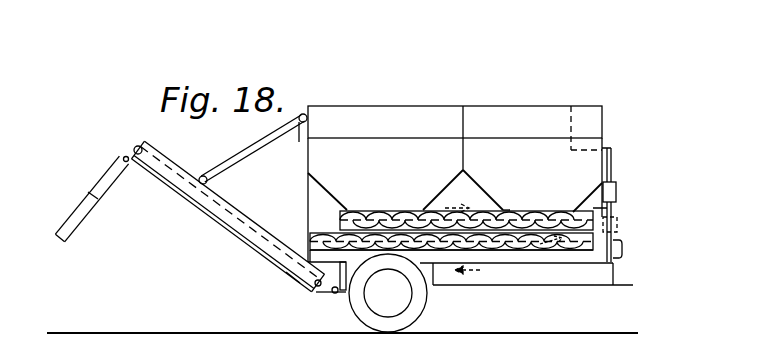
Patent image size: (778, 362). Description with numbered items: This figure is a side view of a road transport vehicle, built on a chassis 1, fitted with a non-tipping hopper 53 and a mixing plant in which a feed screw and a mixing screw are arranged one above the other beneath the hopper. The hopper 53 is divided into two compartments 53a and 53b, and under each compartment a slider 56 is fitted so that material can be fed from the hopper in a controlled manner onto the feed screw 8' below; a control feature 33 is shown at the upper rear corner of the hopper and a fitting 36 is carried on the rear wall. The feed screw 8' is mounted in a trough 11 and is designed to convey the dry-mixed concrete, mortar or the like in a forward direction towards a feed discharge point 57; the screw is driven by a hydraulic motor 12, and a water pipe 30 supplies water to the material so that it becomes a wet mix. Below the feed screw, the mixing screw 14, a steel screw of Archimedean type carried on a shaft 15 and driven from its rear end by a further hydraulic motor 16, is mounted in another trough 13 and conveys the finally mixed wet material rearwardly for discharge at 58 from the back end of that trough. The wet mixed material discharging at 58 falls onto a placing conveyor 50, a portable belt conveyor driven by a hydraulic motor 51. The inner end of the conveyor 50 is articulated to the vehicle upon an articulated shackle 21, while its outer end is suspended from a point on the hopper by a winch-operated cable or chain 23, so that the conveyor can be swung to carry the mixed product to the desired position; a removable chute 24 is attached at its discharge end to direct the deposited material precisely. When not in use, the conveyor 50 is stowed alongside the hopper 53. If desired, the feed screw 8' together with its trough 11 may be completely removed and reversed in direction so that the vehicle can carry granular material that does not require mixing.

The chassis 1 is at (556, 275).
The feed screw 8' is at (466, 195).
The trough 11 is at (505, 208).
The hydraulic motor 12 is at (618, 248).
The trough 13 is at (446, 268).
The mixing screw 14 is at (503, 266).
The shaft 15 is at (468, 263).
The hydraulic motor 16 is at (615, 285).
The articulated shackle 21 is at (330, 294).
The winch-operated cable or chain 23 is at (241, 151).
The removable chute 24 is at (90, 212).
The water pipe 30 is at (570, 265).
The hopper compartment 33 is at (585, 112).
The control box 36 is at (616, 192).
The placing conveyor 50 is at (173, 190).
The hydraulic motor 51 is at (136, 145).
The non-tipping hopper 53 is at (348, 106).
The hopper compartment 53a is at (431, 157).
The hopper compartment 53b is at (490, 157).
The slider 56 is at (350, 208).
The feed discharge point 57 is at (618, 224).
The discharge point 58 is at (288, 277).